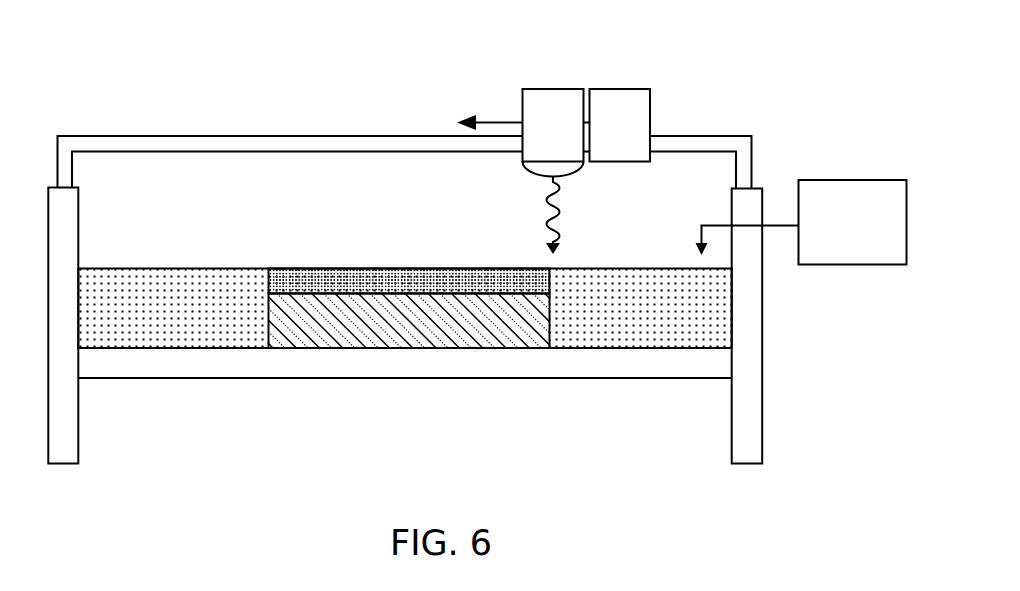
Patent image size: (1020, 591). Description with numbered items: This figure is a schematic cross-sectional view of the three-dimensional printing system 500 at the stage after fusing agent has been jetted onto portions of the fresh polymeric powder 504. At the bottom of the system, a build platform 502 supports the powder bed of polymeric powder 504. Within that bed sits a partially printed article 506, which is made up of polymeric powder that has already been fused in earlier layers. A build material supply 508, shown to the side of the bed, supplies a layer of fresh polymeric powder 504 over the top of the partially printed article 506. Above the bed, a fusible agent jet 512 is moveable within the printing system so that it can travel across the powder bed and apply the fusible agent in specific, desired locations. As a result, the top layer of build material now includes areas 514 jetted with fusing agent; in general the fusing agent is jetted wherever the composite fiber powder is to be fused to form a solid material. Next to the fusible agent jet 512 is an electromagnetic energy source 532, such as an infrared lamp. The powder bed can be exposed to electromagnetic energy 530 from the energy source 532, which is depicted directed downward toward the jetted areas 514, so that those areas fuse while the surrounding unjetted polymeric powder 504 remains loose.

The 3D printing system 500 is at (141, 50).
The build platform 502 is at (580, 357).
The polymeric powder 504 is at (230, 327).
The partially printed article 506 is at (432, 325).
The build material supply 508 is at (873, 234).
The fusible agent jet 512 is at (640, 138).
The areas jetted with fusing agent 514 is at (295, 277).
The electromagnetic energy 530 is at (530, 203).
The electromagnetic energy source 532 is at (573, 138).